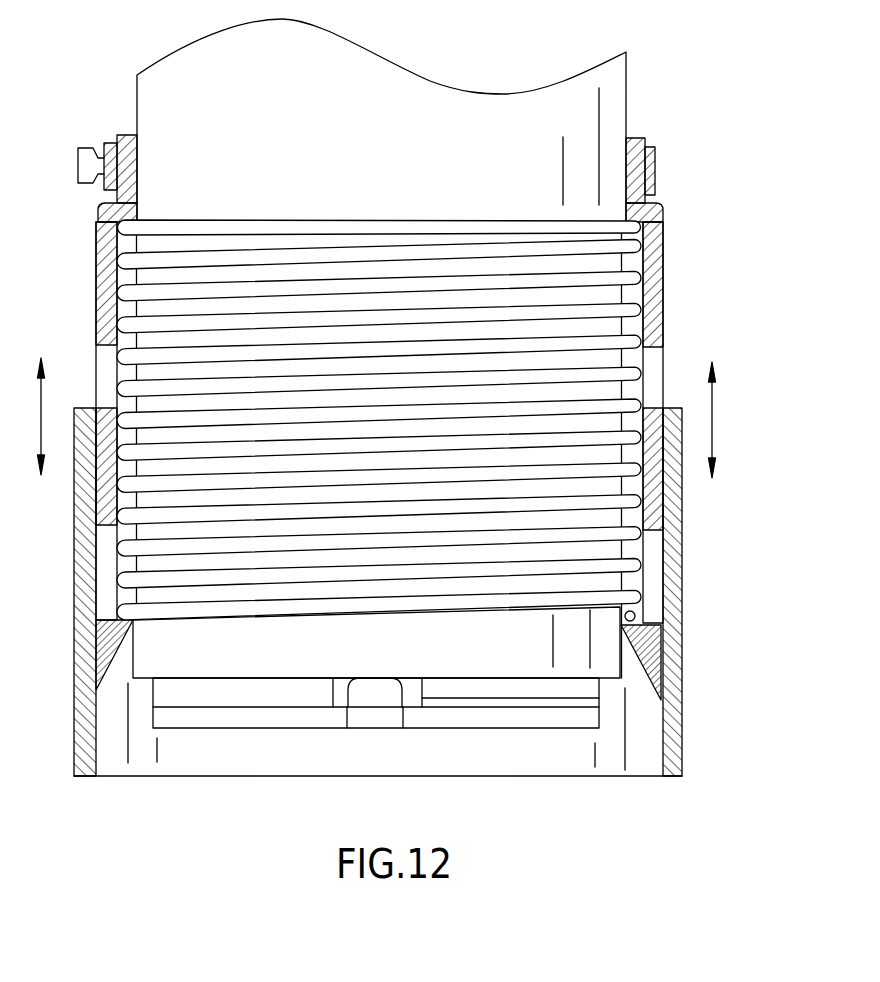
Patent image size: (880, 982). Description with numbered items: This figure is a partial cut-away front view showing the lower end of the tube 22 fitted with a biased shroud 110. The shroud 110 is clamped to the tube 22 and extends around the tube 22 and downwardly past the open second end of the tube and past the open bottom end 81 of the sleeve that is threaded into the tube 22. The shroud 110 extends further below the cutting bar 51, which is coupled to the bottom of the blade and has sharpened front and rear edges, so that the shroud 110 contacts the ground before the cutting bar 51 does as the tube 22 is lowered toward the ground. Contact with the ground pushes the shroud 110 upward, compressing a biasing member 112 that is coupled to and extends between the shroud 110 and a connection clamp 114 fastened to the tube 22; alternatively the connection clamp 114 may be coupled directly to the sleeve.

The tube 22 is at (598, 102).
The connection clamp 114 is at (112, 144).
The biased shroud 110 is at (677, 573).
The biasing member 112 is at (557, 610).
The open bottom end 81 is at (140, 675).
The cutting bar 51 is at (487, 718).